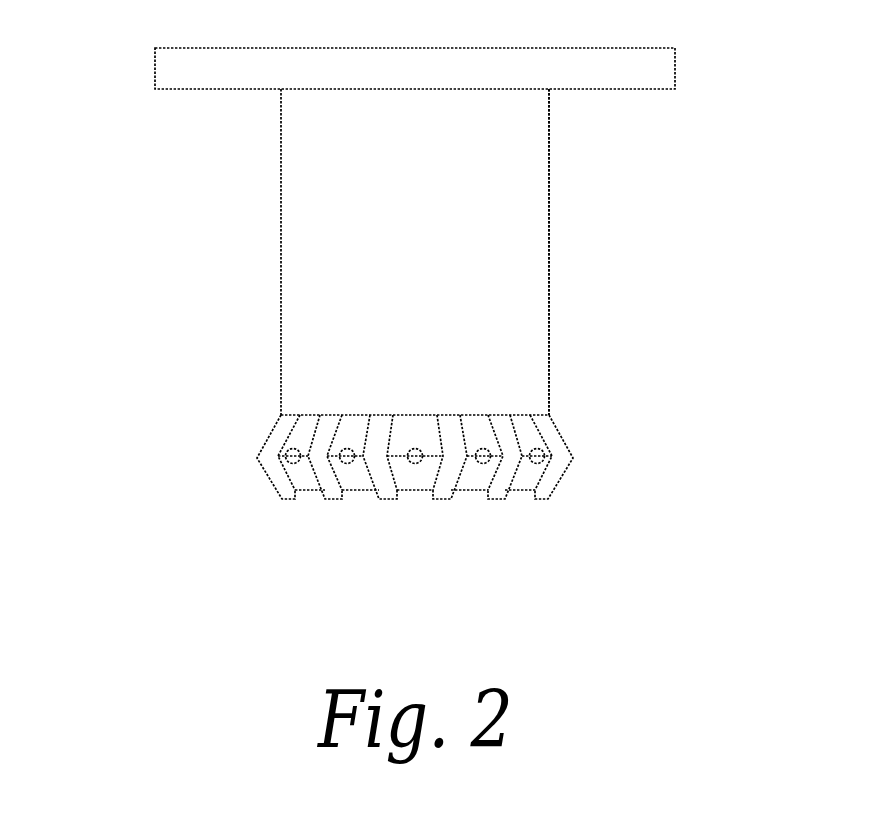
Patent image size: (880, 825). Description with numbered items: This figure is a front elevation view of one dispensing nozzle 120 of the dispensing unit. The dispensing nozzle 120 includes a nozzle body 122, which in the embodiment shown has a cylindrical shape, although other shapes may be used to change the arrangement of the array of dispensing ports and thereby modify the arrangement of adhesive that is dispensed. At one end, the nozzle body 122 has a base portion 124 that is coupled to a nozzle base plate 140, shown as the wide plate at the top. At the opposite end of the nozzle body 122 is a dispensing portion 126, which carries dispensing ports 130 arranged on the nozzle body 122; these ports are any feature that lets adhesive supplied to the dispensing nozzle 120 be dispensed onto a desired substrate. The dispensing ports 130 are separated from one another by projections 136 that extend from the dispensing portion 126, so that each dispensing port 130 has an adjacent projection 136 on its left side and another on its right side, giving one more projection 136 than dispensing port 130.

The dispensing nozzle 120 is at (185, 465).
The nozzle body 122 is at (490, 283).
The base portion 124 is at (550, 108).
The dispensing portion 126 is at (497, 521).
The dispensing ports 130 is at (349, 463).
The projections 136 is at (325, 478).
The nozzle base plate 140 is at (652, 72).